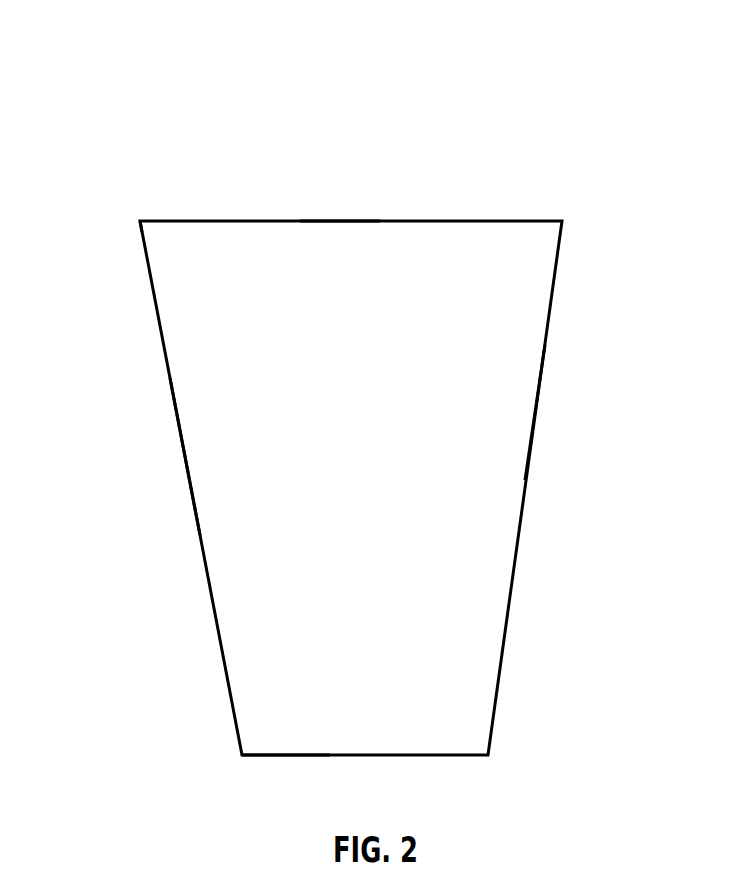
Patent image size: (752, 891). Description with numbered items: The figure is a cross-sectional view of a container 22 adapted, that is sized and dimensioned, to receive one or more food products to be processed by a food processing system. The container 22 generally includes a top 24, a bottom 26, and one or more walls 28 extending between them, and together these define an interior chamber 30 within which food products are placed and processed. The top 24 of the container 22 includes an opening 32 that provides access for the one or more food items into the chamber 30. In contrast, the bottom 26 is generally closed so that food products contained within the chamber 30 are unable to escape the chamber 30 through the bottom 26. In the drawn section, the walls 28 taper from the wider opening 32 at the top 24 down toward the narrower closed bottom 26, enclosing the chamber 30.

The container 22 is at (617, 117).
The top 24 is at (140, 228).
The bottom 26 is at (276, 755).
The walls 28 is at (179, 434).
The interior chamber 30 is at (405, 387).
The opening 32 is at (334, 225).